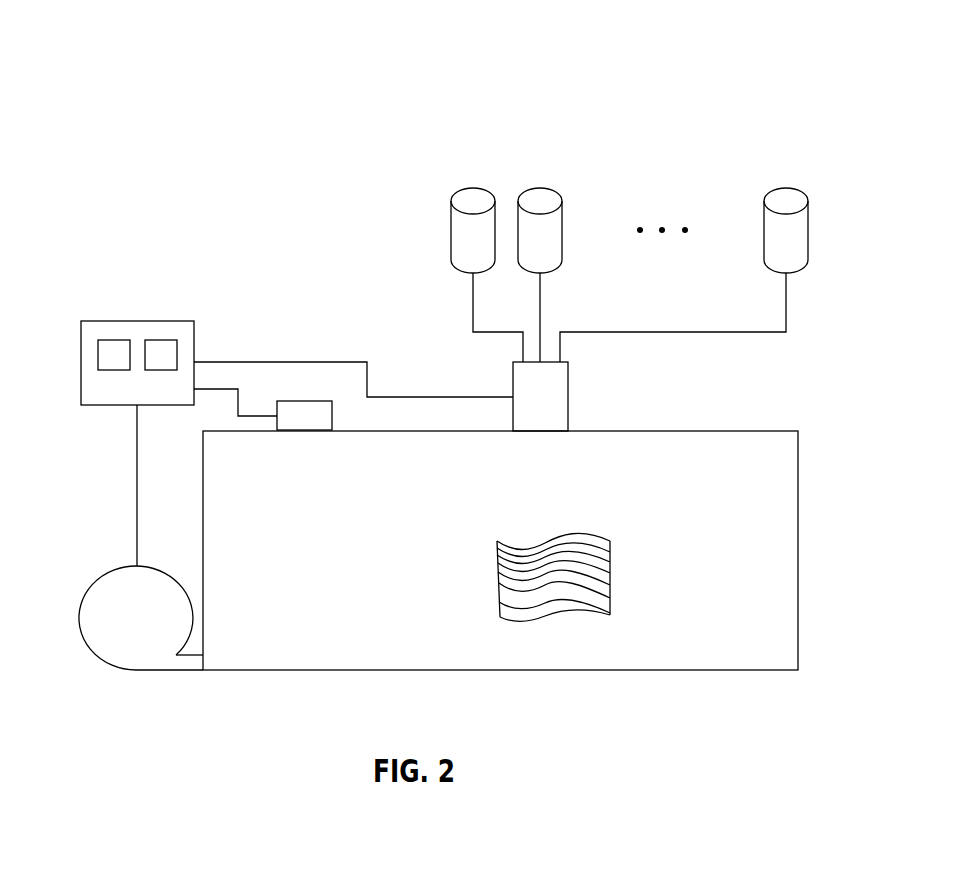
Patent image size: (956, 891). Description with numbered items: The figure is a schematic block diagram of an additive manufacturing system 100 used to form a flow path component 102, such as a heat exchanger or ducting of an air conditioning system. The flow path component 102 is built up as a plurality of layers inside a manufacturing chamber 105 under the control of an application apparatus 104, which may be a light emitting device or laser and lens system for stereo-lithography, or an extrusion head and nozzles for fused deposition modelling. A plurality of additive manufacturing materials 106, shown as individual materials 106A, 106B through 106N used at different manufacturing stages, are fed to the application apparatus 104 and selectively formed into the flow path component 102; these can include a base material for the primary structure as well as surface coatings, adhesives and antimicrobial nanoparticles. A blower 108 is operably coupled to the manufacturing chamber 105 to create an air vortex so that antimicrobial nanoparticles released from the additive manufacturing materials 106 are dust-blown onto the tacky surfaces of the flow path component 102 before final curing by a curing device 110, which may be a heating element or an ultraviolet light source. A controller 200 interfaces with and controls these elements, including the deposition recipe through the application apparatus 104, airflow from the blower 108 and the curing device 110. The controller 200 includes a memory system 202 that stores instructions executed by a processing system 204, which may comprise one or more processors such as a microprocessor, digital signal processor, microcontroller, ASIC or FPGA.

The additive manufacturing system 100 is at (178, 42).
The flow path component 102 is at (525, 622).
The application apparatus 104 is at (568, 397).
The manufacturing chamber 105 is at (340, 672).
The additive manufacturing materials 106 is at (373, 176).
The material 106A is at (474, 188).
The material 106B is at (541, 188).
The material 106N is at (786, 188).
The blower 108 is at (140, 672).
The curing device 110 is at (305, 432).
The controller 200 is at (110, 406).
The memory system 202 is at (113, 340).
The processing system 204 is at (160, 340).